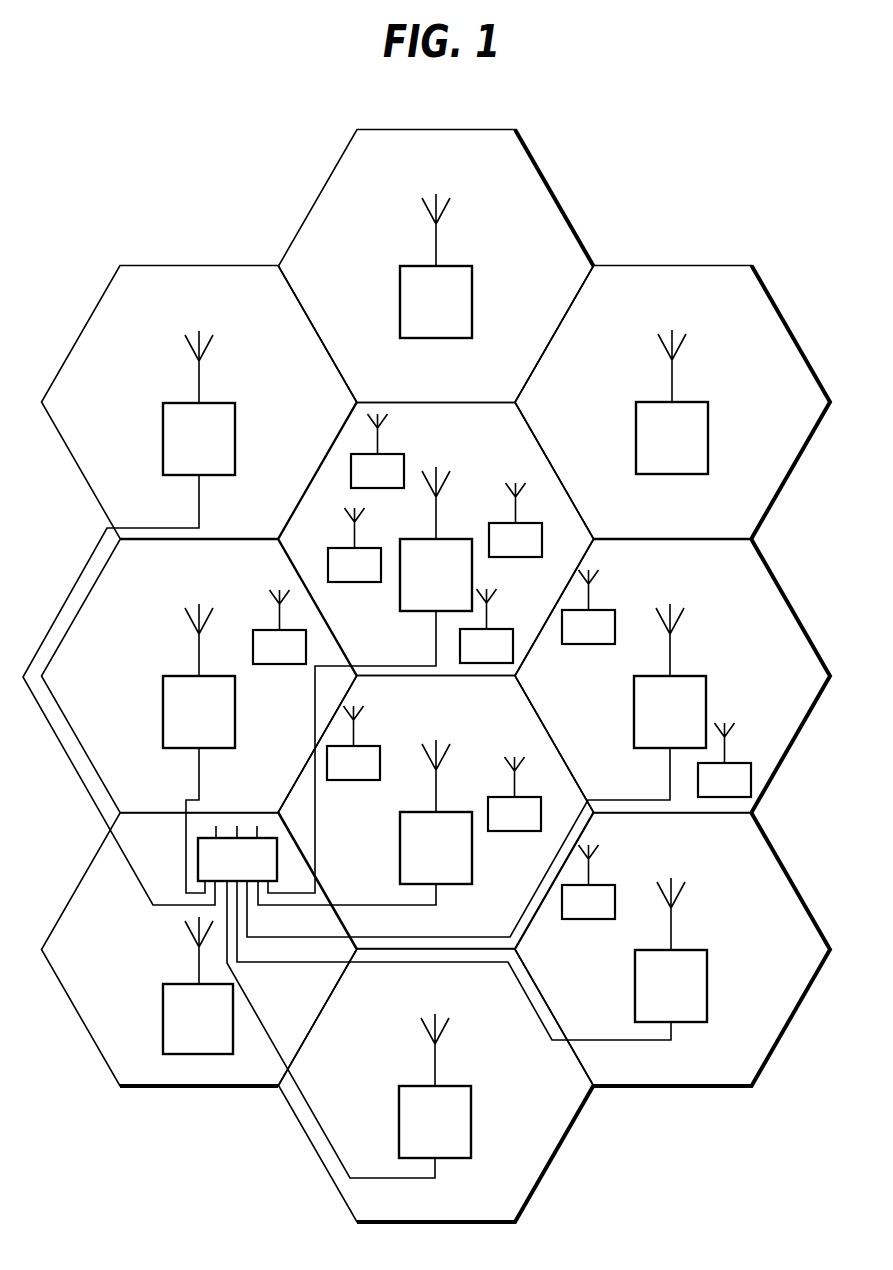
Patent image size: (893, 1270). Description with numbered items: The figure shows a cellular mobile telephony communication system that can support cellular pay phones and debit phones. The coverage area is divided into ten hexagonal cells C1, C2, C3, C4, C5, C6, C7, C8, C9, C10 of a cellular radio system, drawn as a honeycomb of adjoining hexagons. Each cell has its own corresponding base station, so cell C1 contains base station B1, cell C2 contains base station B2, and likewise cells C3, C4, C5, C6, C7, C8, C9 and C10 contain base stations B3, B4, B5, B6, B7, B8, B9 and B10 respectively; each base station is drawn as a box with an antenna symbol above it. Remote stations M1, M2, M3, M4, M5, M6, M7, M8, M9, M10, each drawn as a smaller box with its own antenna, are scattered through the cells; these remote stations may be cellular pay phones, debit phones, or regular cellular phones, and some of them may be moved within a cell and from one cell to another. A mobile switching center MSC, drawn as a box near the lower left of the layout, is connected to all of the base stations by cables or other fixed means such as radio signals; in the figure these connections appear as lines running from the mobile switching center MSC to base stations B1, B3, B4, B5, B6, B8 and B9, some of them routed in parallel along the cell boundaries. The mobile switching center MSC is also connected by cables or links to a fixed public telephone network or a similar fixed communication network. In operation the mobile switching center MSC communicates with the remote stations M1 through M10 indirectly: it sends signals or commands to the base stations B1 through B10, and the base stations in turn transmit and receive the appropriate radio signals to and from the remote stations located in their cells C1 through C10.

The base station B1 is at (370, 680).
The base station B2 is at (672, 402).
The base station B3 is at (476, 770).
The base station B4 is at (365, 822).
The base station B5 is at (199, 748).
The base station B6 is at (129, 618).
The base station B7 is at (436, 266).
The base station B8 is at (472, 959).
The base station B9 is at (349, 1029).
The base station B10 is at (198, 985).
The remote station M1 is at (588, 882).
The remote station M2 is at (279, 627).
The remote station M3 is at (354, 545).
The remote station M4 is at (515, 520).
The remote station M5 is at (588, 607).
The remote station M6 is at (377, 451).
The remote station M7 is at (486, 626).
The remote station M8 is at (514, 794).
The remote station M9 is at (353, 743).
The remote station M10 is at (724, 760).
The cell C1 is at (379, 660).
The cell C2 is at (618, 524).
The cell C3 is at (615, 797).
The cell C4 is at (378, 936).
The cell C5 is at (146, 800).
The cell C6 is at (146, 524).
The cell C7 is at (383, 392).
The cell C8 is at (616, 1076).
The cell C9 is at (382, 1211).
The cell C10 is at (150, 1077).
The mobile switching center MSC is at (237, 853).